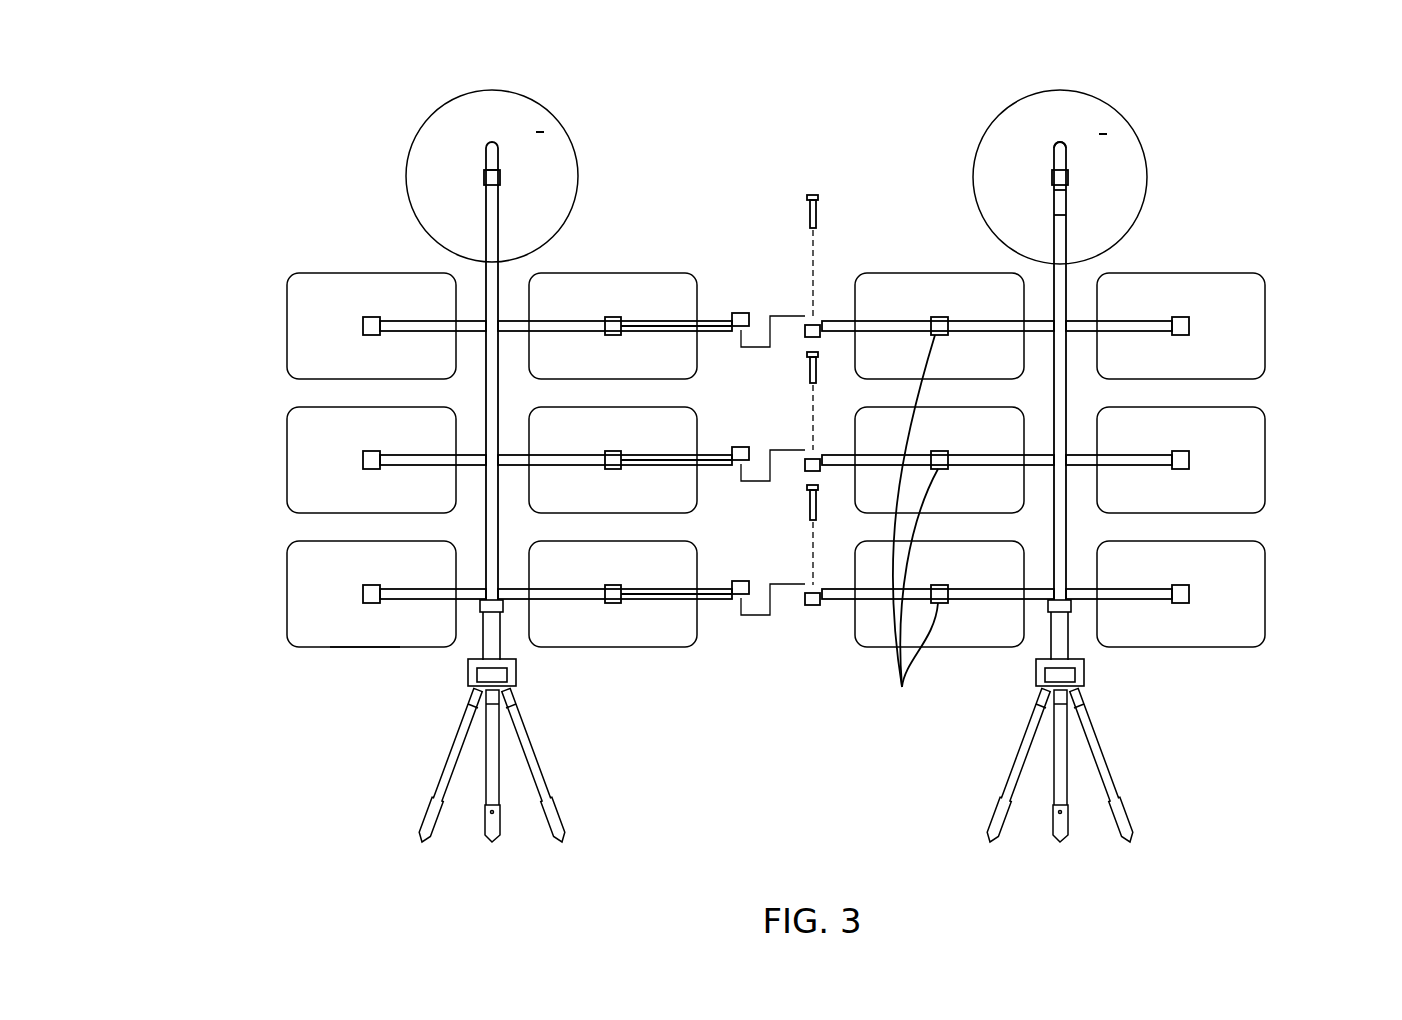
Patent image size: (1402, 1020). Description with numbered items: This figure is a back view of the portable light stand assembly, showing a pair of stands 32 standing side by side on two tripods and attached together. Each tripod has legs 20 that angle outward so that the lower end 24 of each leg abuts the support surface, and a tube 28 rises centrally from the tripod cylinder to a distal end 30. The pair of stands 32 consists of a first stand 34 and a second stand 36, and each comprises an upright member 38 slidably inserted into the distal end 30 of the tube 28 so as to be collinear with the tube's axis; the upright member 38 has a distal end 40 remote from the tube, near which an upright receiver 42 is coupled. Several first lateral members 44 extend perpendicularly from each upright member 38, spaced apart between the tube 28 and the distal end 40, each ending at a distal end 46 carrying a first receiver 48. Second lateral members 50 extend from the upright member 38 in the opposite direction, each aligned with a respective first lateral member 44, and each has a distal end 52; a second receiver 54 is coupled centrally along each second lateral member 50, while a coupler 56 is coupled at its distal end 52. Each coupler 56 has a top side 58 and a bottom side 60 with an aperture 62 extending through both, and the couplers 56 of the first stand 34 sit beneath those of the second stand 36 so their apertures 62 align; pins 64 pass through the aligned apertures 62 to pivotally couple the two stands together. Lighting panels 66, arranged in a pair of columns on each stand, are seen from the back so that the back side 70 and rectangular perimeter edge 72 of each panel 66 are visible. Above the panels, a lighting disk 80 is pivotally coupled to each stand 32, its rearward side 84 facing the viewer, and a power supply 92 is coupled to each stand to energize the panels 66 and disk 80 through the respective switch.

The legs 20 is at (533, 770).
The lower end 24 is at (630, 856).
The tube 28 is at (1053, 628).
The distal end 30 is at (1093, 597).
The stands 32 is at (498, 283).
The first stand 34 is at (1072, 205).
The second stand 36 is at (484, 205).
The upright member 38 is at (1052, 218).
The distal end 40 is at (1062, 142).
The upright receiver 42 is at (1052, 177).
The first lateral members 44 is at (408, 453).
The distal end 46 is at (363, 323).
The first receivers 48 is at (1188, 318).
The second lateral members 50 is at (667, 320).
The distal end 52 is at (724, 318).
The second receivers 54 is at (907, 530).
The couplers 56 is at (745, 313).
The top side 58 is at (805, 597).
The bottom side 60 is at (812, 606).
The aperture 62 is at (812, 585).
The pins 64 is at (805, 194).
The lighting panels 66 is at (333, 273).
The back side 70 is at (300, 597).
The perimeter edge 72 is at (340, 647).
The lighting disks 80 is at (490, 91).
The rearward side 84 is at (540, 130).
The power supplies 92 is at (468, 663).